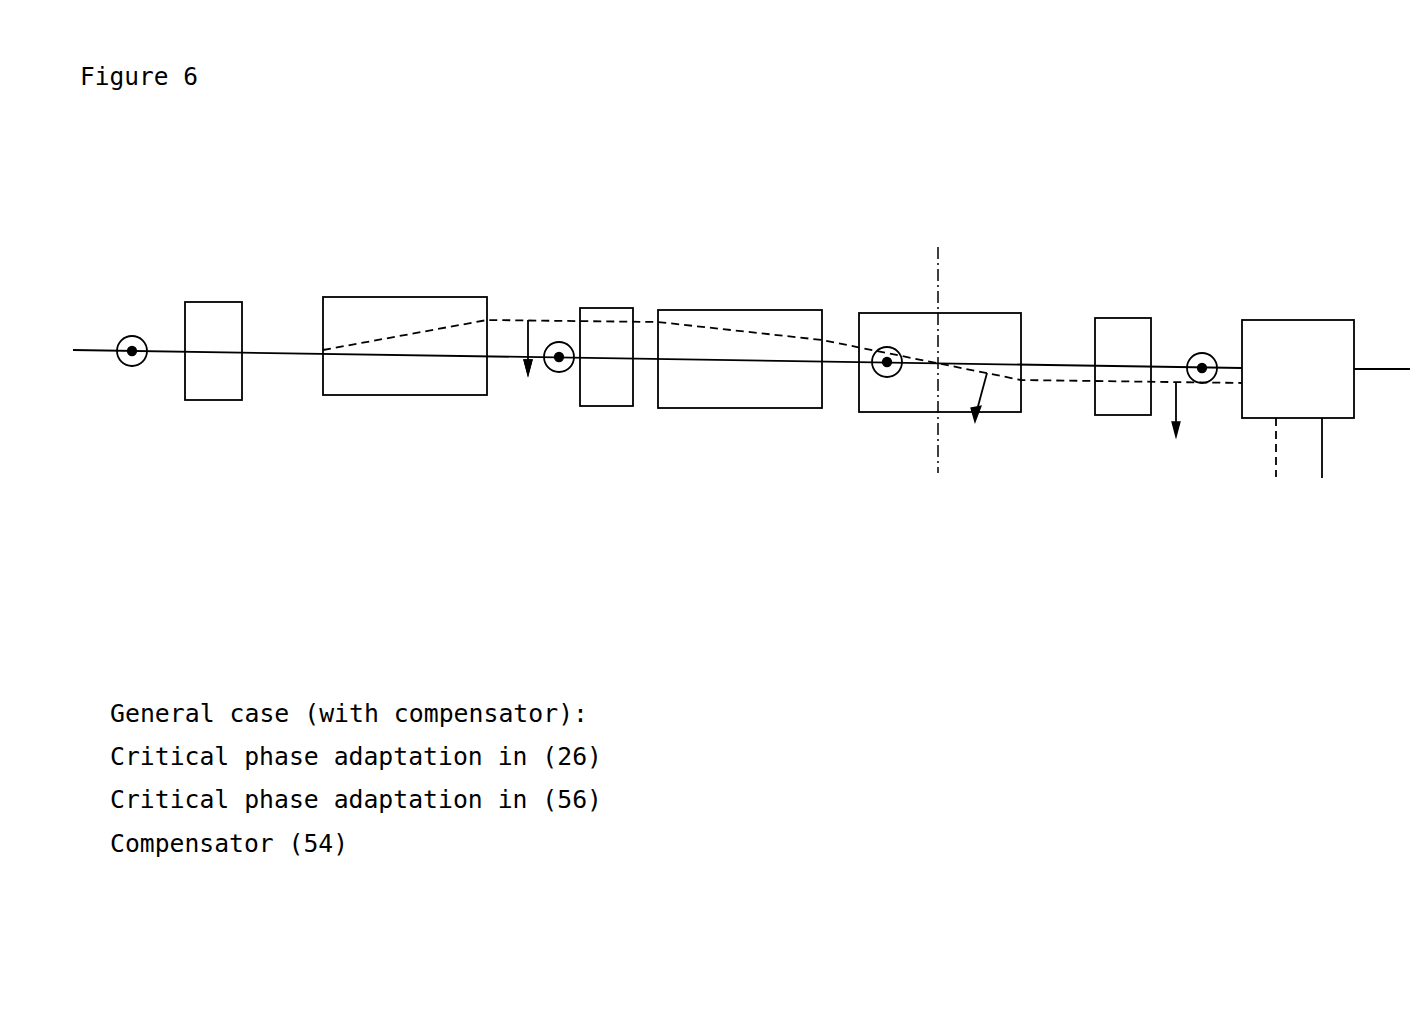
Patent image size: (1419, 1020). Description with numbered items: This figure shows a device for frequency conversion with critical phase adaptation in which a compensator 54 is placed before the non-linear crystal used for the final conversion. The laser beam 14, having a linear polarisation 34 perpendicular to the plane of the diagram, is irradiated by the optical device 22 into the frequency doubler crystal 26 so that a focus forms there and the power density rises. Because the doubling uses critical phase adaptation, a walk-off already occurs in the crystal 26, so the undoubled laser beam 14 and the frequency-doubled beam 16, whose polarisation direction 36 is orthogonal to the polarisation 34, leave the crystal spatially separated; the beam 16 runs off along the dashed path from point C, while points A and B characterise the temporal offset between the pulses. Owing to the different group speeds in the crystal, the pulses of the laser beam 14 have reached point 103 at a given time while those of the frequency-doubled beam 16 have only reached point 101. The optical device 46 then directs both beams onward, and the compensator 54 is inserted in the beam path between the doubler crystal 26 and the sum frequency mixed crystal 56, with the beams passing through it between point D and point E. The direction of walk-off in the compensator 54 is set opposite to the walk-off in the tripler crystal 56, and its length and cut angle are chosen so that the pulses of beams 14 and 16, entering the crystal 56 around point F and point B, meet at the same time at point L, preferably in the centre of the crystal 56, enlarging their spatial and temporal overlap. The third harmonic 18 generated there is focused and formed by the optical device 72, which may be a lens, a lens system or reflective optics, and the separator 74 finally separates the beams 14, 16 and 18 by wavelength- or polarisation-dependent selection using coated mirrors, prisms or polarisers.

The laser beam 14 is at (87, 347).
The third harmonic 18 is at (1063, 268).
The frequency-doubled beam 16 is at (503, 320).
The linear polarisation 34 is at (145, 340).
The optical device 22 is at (213, 330).
The frequency doubler crystal 26 is at (405, 327).
The point 101 is at (528, 320).
The polarisation direction 36 is at (524, 375).
The point 103 is at (563, 341).
The optical device 46 is at (608, 341).
The compensator 54 is at (740, 341).
The sum frequency mixed crystal 56 is at (940, 347).
The optical device 72 is at (1156, 356).
The separator 74 is at (1298, 347).
The point A is at (320, 350).
The point B is at (860, 362).
The point C is at (487, 321).
The point D is at (658, 322).
The point E is at (822, 340).
The point F is at (860, 345).
The point L is at (937, 365).